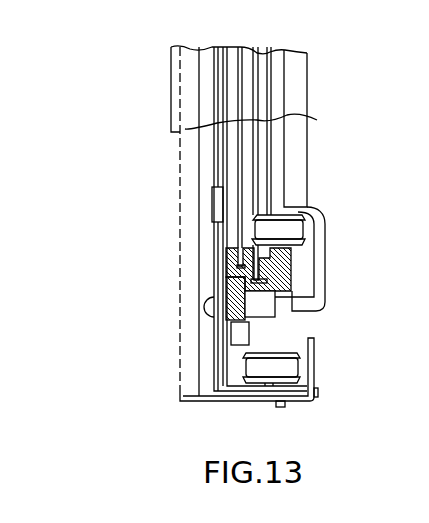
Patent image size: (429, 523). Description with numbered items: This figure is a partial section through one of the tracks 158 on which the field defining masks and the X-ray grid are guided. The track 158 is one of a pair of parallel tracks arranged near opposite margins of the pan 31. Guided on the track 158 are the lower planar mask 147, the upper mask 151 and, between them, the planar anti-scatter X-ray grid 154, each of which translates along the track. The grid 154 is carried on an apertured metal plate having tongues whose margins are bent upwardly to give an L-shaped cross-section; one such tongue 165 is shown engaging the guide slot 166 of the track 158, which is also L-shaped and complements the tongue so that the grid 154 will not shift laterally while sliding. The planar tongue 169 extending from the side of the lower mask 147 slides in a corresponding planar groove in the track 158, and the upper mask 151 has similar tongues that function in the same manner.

The pan 31 is at (215, 358).
The lower planar mask 147 is at (237, 183).
The upper mask 151 is at (317, 120).
The anti-scatter X-ray grid 154 is at (185, 129).
The track 158 is at (292, 268).
The tongue 165 is at (276, 297).
The guide slot 166 is at (230, 276).
The planar tongue 169 is at (240, 263).